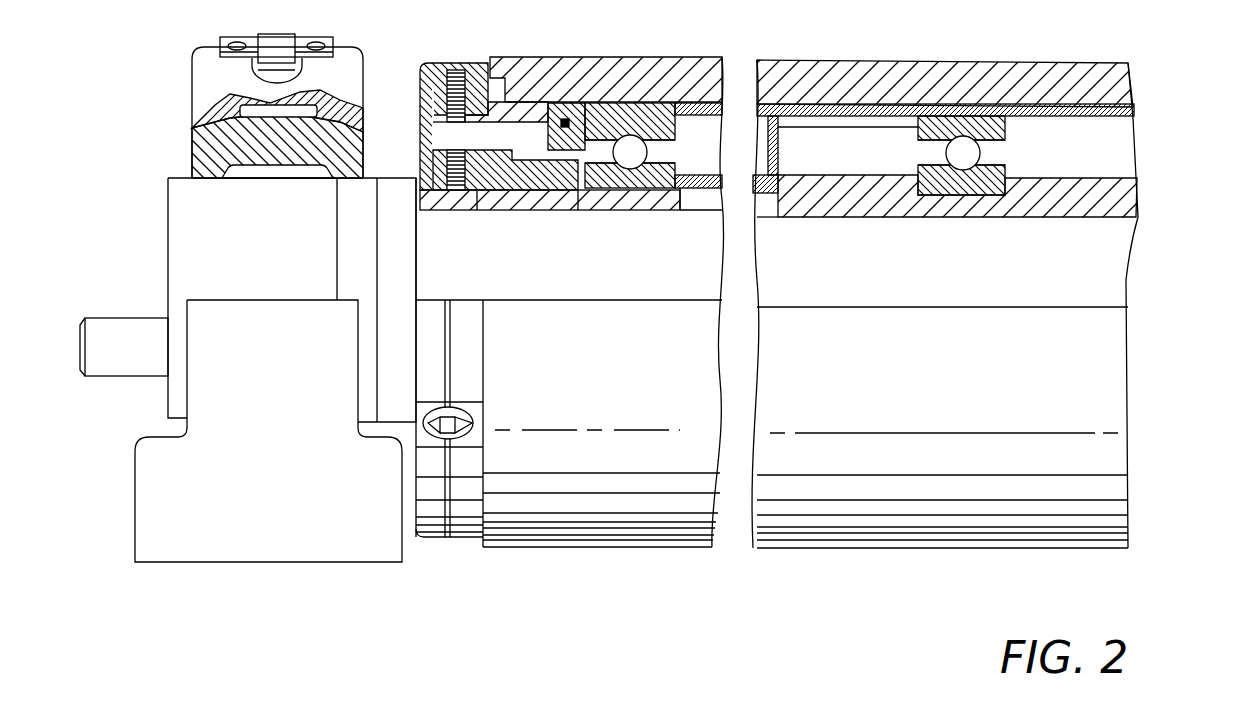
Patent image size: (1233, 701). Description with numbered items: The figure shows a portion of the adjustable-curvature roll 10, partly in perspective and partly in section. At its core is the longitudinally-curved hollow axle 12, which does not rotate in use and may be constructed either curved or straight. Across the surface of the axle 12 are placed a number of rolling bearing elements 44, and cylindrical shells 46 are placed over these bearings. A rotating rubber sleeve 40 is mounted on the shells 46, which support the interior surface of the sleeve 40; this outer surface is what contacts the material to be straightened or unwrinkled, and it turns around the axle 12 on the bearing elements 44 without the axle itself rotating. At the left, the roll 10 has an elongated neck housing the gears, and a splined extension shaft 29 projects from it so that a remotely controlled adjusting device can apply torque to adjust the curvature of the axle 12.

The roll 10 is at (1116, 561).
The hollow axle 12 is at (1120, 196).
The splined extension shaft 29 is at (78, 342).
The rubber sleeve 40 is at (1107, 85).
The rolling bearing elements 44 is at (620, 178).
The cylindrical shells 46 is at (1131, 112).